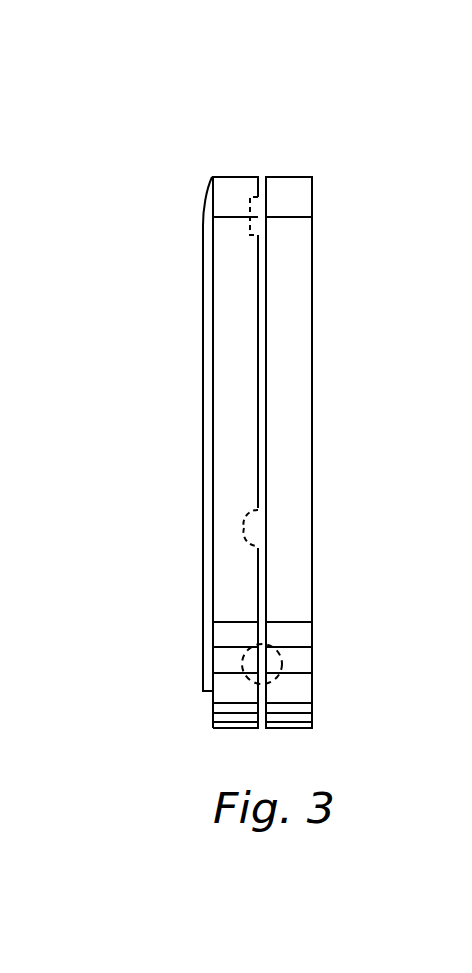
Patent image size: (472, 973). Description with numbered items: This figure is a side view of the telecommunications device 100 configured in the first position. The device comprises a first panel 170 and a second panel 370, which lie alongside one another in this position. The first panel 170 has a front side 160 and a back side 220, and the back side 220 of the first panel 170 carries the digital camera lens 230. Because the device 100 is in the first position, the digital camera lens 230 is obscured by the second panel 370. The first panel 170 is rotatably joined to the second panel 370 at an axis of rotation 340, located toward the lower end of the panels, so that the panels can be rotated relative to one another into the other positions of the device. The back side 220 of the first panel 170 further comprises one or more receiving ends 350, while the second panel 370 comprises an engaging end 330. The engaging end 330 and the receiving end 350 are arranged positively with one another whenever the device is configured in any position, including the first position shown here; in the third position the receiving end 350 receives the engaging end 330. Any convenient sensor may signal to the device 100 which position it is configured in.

The telecommunications device 100 is at (142, 141).
The front side 160 is at (208, 453).
The first panel 170 is at (238, 287).
The back side 220 is at (263, 373).
The digital camera lens 230 is at (249, 214).
The engaging end 330 is at (258, 521).
The axis of rotation 340 is at (243, 673).
The receiving end 350 is at (250, 542).
The second panel 370 is at (283, 450).